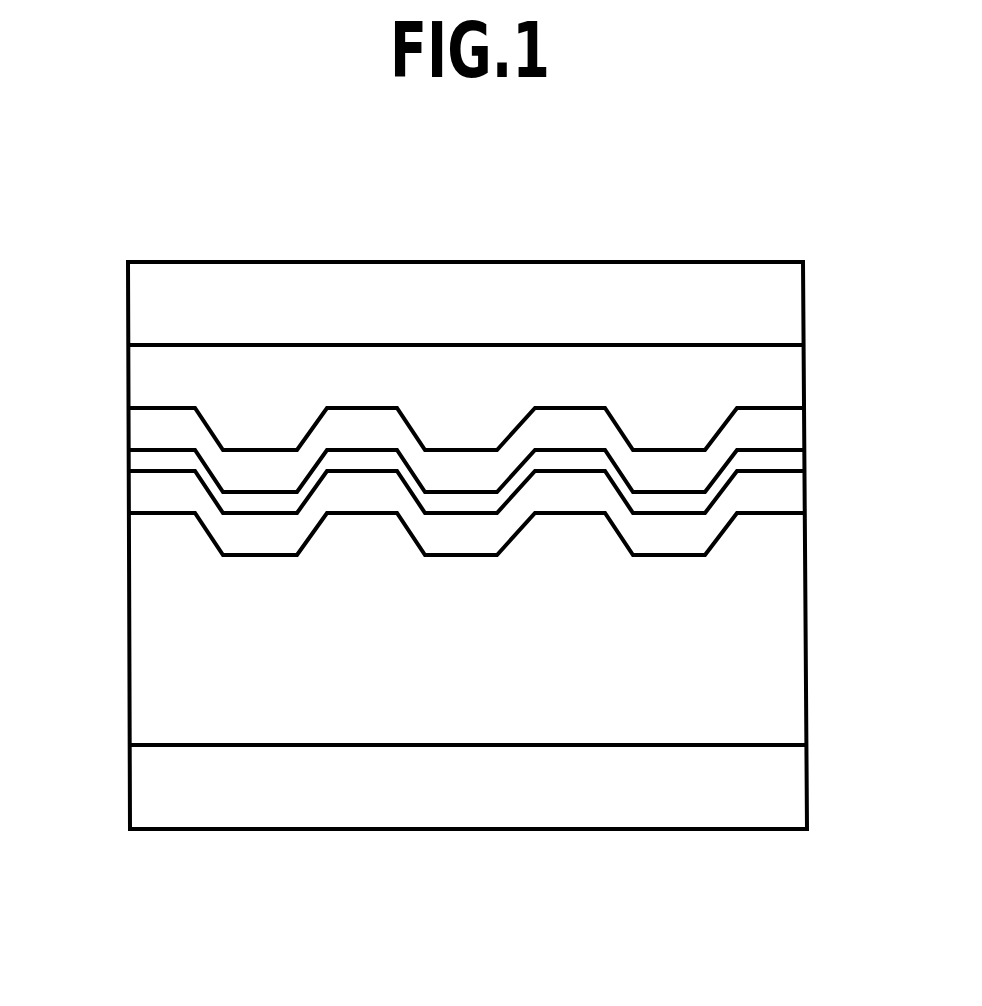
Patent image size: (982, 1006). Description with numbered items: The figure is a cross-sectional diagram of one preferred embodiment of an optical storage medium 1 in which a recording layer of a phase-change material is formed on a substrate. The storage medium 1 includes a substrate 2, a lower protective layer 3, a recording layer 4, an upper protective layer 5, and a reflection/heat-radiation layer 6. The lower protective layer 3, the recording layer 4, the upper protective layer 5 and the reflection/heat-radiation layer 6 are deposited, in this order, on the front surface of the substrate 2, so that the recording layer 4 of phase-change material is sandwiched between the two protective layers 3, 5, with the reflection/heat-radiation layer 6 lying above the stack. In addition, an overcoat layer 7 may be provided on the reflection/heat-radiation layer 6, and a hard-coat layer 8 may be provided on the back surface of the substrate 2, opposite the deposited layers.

The storage medium 1 is at (696, 249).
The substrate 2 is at (138, 647).
The lower protective layer 3 is at (790, 490).
The recording layer 4 is at (138, 462).
The upper protective layer 5 is at (790, 428).
The reflection/heat-radiation layer 6 is at (790, 375).
The overcoat layer 7 is at (790, 307).
The hard-coat layer 8 is at (138, 793).